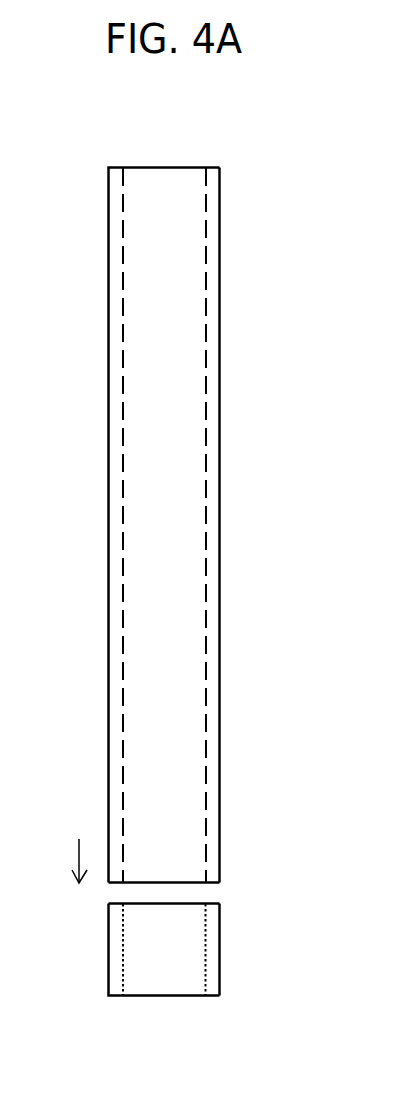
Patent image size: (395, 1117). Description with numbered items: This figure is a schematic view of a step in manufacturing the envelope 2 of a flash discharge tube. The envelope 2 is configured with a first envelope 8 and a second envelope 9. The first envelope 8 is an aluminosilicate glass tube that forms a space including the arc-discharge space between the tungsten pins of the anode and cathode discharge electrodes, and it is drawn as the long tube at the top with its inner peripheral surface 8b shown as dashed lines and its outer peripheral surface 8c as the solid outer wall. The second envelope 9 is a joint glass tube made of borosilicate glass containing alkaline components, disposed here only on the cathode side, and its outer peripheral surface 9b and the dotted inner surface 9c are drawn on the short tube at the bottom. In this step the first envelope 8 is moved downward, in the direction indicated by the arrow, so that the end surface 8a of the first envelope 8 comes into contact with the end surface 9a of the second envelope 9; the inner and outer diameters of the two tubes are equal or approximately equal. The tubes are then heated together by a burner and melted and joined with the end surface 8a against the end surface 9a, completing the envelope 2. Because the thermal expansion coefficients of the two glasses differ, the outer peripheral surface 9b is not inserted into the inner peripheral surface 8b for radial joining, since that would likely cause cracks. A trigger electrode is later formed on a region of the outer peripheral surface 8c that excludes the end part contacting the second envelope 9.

The envelope 2 is at (278, 132).
The first envelope 8 is at (212, 440).
The end surface of first envelope 8a is at (117, 883).
The inner peripheral surface of first envelope 8b is at (205, 668).
The outer peripheral surface of first envelope 8c is at (220, 553).
The second envelope 9 is at (212, 977).
The end surface of second envelope 9a is at (215, 903).
The outer peripheral surface of second envelope 9b is at (219, 925).
The inner portion of second member 9c is at (205, 960).